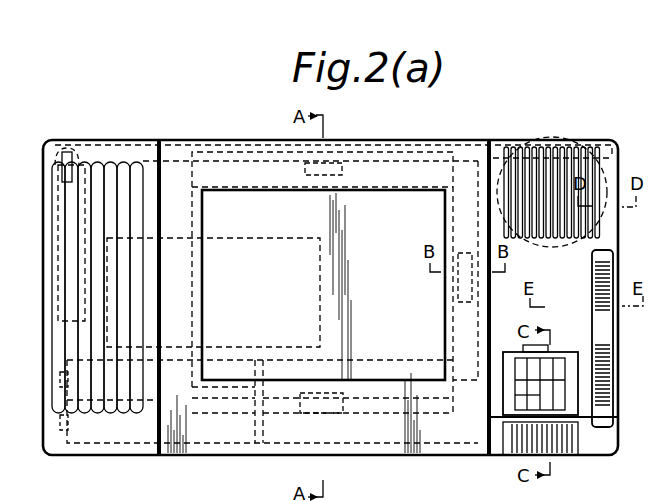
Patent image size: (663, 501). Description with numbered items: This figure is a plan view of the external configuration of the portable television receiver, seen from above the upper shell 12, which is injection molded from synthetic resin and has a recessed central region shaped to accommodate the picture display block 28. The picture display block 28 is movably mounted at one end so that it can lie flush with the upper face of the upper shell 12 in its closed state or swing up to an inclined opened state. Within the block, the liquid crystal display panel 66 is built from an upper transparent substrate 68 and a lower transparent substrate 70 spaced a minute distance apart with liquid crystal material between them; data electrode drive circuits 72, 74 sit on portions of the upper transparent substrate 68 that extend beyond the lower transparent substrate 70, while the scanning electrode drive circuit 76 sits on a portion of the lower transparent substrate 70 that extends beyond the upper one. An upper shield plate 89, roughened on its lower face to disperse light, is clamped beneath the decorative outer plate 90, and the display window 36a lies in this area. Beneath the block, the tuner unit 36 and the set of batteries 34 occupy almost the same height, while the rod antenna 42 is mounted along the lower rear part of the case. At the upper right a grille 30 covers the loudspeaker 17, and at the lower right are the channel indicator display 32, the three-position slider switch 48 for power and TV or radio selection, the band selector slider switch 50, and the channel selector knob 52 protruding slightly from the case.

The picture display block 28 is at (160, 138).
The decorative outer plate 90 is at (176, 238).
The tuner unit 36 is at (204, 188).
The display window 36a is at (110, 344).
The upper transparent substrate 68 is at (287, 172).
The data electrode drive circuit 72 is at (333, 172).
The upper shield plate 89 is at (384, 208).
The liquid crystal display panel 66 is at (433, 150).
The lower transparent substrate 70 is at (491, 141).
The grille 30 is at (540, 162).
The loudspeaker 17 is at (600, 142).
The rod antenna 42 is at (57, 258).
The scanning electrode drive circuit 76 is at (456, 291).
The 3-position slider switch 48 is at (609, 270).
The channel selector knob 52 is at (605, 397).
The upper shell 12 is at (202, 440).
The set of batteries 34 is at (234, 447).
The data electrode drive circuit 74 is at (339, 409).
The band selector slider switch 50 is at (561, 444).
The channel indicator display 32 is at (573, 402).